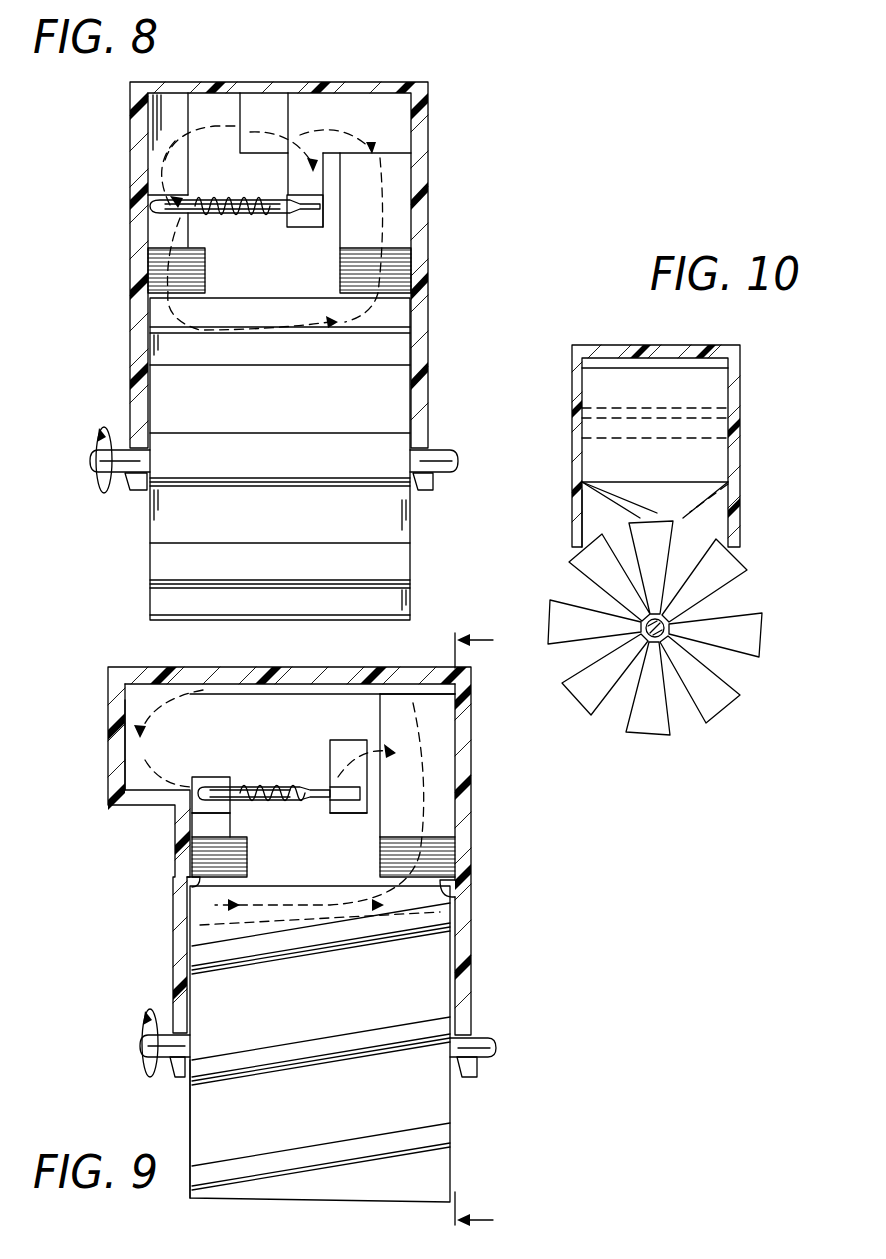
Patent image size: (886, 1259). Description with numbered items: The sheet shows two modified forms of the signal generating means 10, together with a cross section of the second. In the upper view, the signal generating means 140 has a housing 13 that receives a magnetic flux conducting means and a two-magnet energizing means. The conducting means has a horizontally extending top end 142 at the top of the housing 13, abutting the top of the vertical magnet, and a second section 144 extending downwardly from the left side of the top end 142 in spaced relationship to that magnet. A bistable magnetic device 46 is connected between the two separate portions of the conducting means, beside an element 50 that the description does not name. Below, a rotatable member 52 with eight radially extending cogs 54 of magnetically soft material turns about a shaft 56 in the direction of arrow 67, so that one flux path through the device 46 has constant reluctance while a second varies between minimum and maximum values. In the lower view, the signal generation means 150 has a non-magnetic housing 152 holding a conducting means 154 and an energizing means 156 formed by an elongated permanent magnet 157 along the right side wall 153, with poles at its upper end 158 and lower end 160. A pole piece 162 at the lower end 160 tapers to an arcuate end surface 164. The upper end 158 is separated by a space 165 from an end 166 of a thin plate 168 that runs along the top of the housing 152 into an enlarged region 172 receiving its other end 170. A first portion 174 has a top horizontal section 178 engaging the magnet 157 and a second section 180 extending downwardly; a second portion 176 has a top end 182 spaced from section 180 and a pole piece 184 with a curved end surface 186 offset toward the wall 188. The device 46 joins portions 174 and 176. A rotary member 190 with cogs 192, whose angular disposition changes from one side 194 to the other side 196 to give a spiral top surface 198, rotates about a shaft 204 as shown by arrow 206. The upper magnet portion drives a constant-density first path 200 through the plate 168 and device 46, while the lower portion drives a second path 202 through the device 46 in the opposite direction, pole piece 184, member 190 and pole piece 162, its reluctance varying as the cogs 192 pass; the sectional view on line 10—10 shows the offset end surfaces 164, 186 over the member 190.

In FIG. 8, the signal generating means 140 is at (532, 107).
In FIG. 8, the housing 13 is at (132, 125).
In FIG. 8, the top end of first portion 142 is at (374, 98).
In FIG. 8, the bistable magnetic device 46 is at (217, 192).
In FIG. 9, the bistable magnetic device 46 is at (250, 775).
In FIG. 8, the spring 50 is at (270, 195).
In FIG. 9, the spring 50 is at (305, 785).
In FIG. 8, the second section of first portion 144 is at (325, 227).
In FIG. 8, the arrow 67 is at (106, 425).
In FIG. 8, the shaft 56 is at (440, 448).
In FIG. 8, the rotatable member 52 is at (150, 523).
In FIG. 8, the cogs 54 is at (402, 565).
In FIG. 9, the signal generating means 150 is at (86, 703).
In FIG. 10, the signal generating means 150 is at (792, 342).
In FIG. 9, the housing 152 is at (120, 770).
In FIG. 10, the housing 152 is at (572, 407).
In FIG. 9, the enlarged region 172 is at (108, 678).
In FIG. 9, the other end of plate 170 is at (138, 685).
In FIG. 9, the first path for magnetic flux 200 is at (292, 685).
In FIG. 9, the elongated thin plate 168 is at (316, 686).
In FIG. 10, the elongated thin plate 168 is at (612, 358).
In FIG. 9, the end of plate 166 is at (427, 684).
In FIG. 10, the end of plate 166 is at (728, 533).
In FIG. 9, the section line 10 is at (491, 931).
In FIG. 9, the space 165 is at (450, 690).
In FIG. 10, the space 165 is at (582, 362).
In FIG. 9, the upper end of magnet 158 is at (442, 718).
In FIG. 9, the energizing means 156 is at (440, 757).
In FIG. 10, the energizing means 156 is at (712, 392).
In FIG. 9, the elongated permanent magnet 157 is at (442, 808).
In FIG. 9, the lower end of magnet 160 is at (440, 829).
In FIG. 9, the pole piece 162 is at (447, 862).
In FIG. 10, the pole piece 162 is at (693, 487).
In FIG. 9, the arcuate end surface 164 is at (457, 893).
In FIG. 10, the arcuate end surface 164 is at (728, 508).
In FIG. 9, the right side wall 153 is at (473, 934).
In FIG. 9, the top end of second portion 182 is at (202, 777).
In FIG. 9, the first portion of conducting means 174 is at (327, 755).
In FIG. 9, the top horizontal section 178 is at (358, 740).
In FIG. 9, the second portion of conducting means 176 is at (231, 818).
In FIG. 9, the pole piece 184 is at (193, 841).
In FIG. 10, the pole piece 184 is at (582, 490).
In FIG. 9, the magnetic flux conducting means 154 is at (342, 808).
In FIG. 9, the second section of first portion 180 is at (357, 814).
In FIG. 9, the curved end surface 186 is at (195, 885).
In FIG. 10, the curved end surface 186 is at (642, 527).
In FIG. 9, the arrow 206 is at (150, 1008).
In FIG. 9, the shaft 204 is at (482, 1040).
In FIG. 10, the shaft 204 is at (643, 622).
In FIG. 9, the rotary member 190 is at (440, 1108).
In FIG. 10, the rotary member 190 is at (664, 733).
In FIG. 9, the one side of rotary member 194 is at (452, 1092).
In FIG. 10, the one side of rotary member 194 is at (732, 580).
In FIG. 9, the cogs 192 is at (223, 1065).
In FIG. 10, the cogs 192 is at (760, 633).
In FIG. 9, the other side of rotary member 196 is at (188, 1097).
In FIG. 9, the outer top surface of cog 198 is at (440, 1137).
In FIG. 10, the outer top surface of cog 198 is at (590, 714).
In FIG. 9, the second path for magnetic flux 202 is at (302, 930).
In FIG. 10, the wall of housing 188 is at (572, 512).